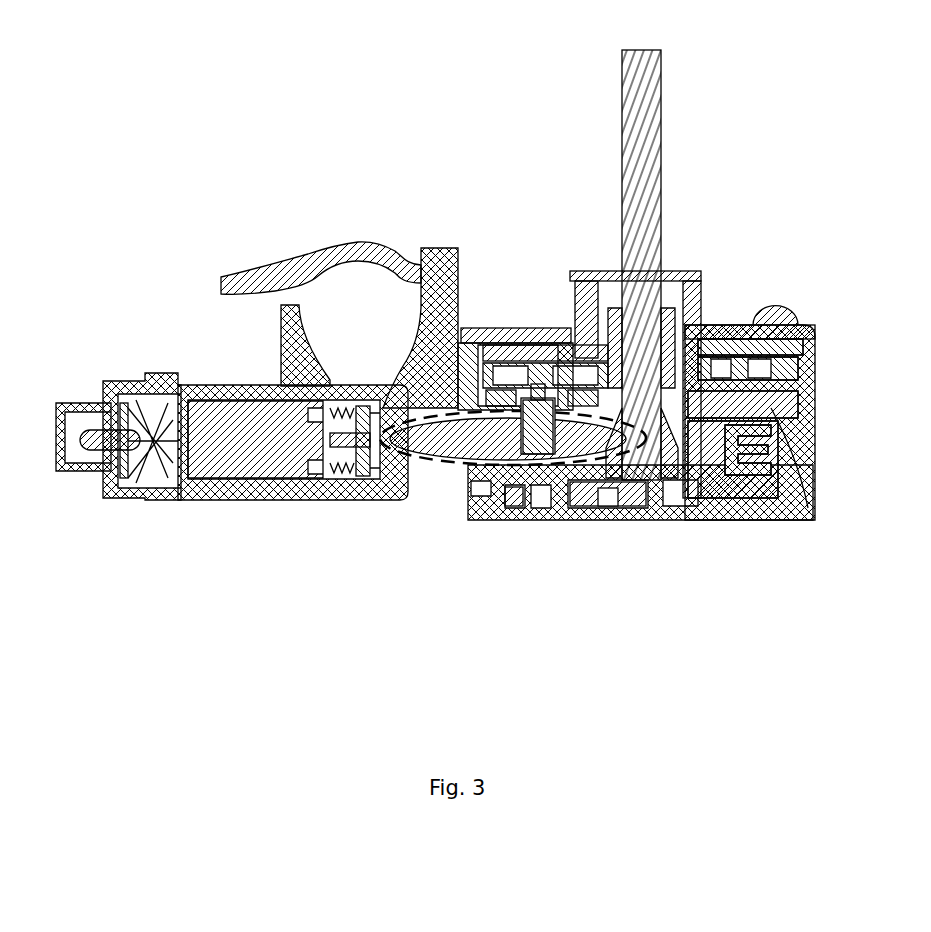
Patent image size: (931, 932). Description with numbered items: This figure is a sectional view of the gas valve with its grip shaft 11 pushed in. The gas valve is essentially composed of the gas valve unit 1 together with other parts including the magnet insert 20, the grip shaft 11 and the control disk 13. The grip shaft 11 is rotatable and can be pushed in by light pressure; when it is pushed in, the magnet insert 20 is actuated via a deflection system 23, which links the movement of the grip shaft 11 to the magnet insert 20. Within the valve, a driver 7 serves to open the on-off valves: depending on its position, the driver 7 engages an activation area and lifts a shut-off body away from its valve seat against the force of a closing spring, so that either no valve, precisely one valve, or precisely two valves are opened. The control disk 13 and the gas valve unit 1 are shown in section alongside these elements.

The gas valve unit 1 is at (767, 470).
The driver 7 is at (530, 462).
The grip shaft 11 is at (625, 165).
The control disk 13 is at (492, 487).
The magnet insert 20 is at (250, 420).
The deflection system 23 is at (490, 398).